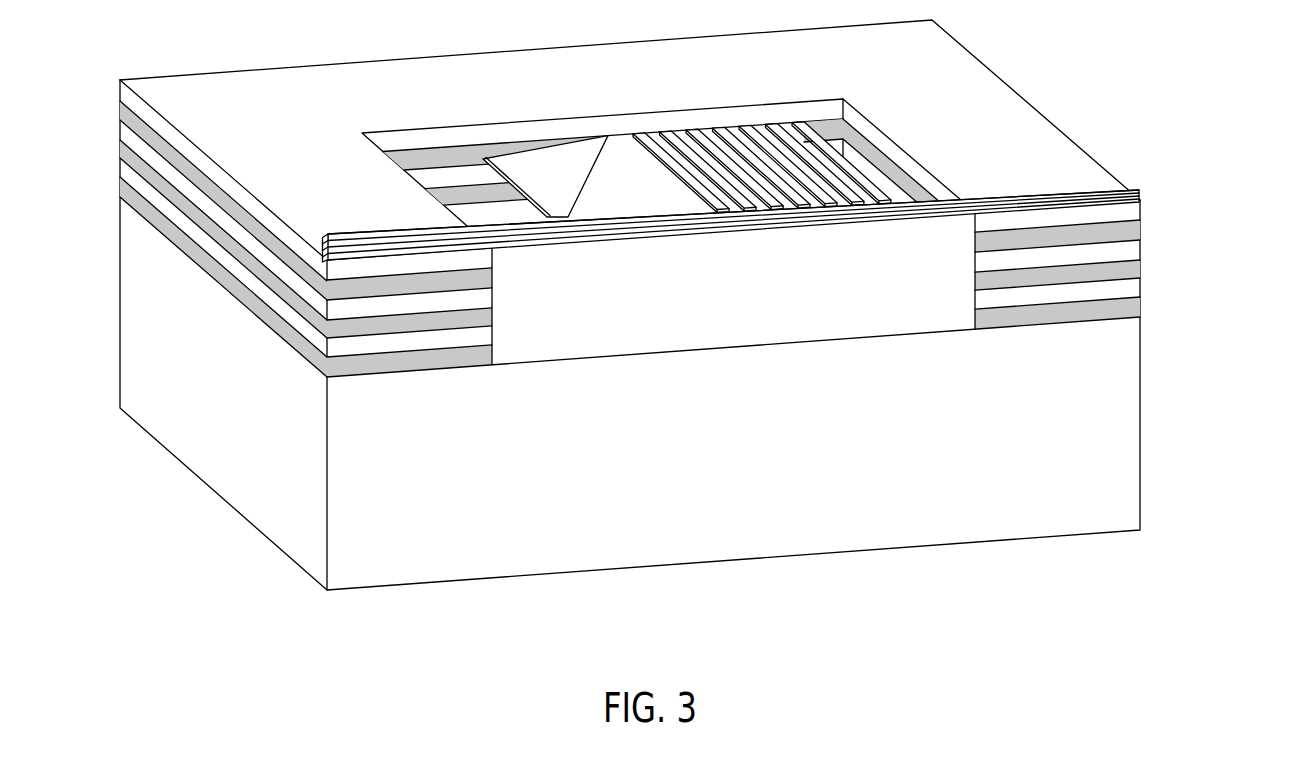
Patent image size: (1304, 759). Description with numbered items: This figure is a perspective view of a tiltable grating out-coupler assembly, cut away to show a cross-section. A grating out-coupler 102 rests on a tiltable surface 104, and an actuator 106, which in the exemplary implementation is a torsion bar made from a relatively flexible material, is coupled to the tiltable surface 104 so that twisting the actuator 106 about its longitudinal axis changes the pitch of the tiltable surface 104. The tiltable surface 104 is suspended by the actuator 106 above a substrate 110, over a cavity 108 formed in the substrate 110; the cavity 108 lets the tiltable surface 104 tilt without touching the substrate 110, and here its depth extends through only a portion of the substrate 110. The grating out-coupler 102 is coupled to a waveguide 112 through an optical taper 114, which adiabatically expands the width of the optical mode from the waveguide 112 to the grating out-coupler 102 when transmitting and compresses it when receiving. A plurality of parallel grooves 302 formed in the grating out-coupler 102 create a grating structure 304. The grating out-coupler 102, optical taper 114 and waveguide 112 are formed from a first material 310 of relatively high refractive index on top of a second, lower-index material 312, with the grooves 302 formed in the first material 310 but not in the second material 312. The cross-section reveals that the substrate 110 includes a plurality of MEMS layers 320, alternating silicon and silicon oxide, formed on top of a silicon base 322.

The grating out-coupler 102 is at (803, 118).
The tiltable surface 104 is at (532, 170).
The actuator 106 is at (760, 200).
The cavity 108 is at (441, 128).
The substrate 110 is at (282, 88).
The waveguide 112 is at (349, 258).
The optical taper 114 is at (621, 145).
The grooves 302 is at (742, 110).
The grating structure 304 is at (685, 110).
The first material 310 is at (903, 206).
The second material 312 is at (350, 257).
The MEMS layers 320 is at (1147, 202).
The base 322 is at (1113, 453).